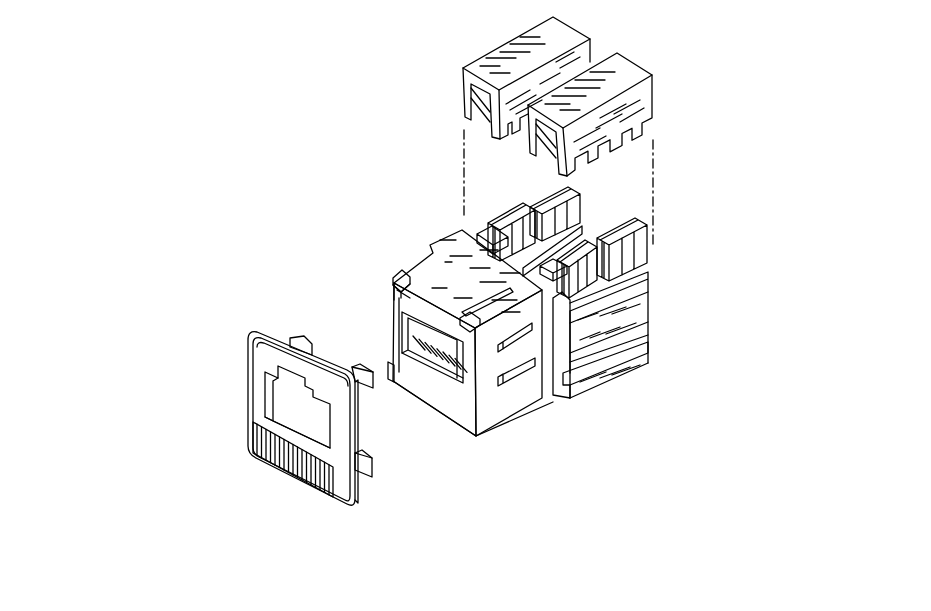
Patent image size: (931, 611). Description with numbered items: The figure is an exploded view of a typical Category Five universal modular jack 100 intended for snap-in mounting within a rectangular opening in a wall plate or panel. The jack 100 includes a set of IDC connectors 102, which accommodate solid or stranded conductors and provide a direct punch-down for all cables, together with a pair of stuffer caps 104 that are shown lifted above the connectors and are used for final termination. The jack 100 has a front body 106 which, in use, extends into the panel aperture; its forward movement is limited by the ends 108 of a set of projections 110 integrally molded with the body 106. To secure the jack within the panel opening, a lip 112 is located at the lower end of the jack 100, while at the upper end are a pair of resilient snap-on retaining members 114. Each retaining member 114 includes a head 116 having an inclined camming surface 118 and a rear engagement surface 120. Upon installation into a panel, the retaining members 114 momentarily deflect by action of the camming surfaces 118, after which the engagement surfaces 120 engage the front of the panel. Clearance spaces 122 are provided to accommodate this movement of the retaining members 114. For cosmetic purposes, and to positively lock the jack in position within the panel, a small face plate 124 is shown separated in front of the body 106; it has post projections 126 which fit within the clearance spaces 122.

The universal modular jack 100 is at (320, 147).
The IDC connectors 102 is at (684, 240).
The stuffer caps 104 is at (532, 43).
The front body 106 is at (440, 403).
The ends 108 is at (497, 410).
The projections 110 is at (498, 405).
The lip 112 is at (478, 441).
The resilient snap-on retaining members 114 is at (412, 230).
The head 116 is at (365, 280).
The inclined camming surface 118 is at (393, 280).
The rear engagement surface 120 is at (405, 277).
The clearance spaces 122 is at (397, 366).
The face plate 124 is at (280, 467).
The post projections 126 is at (372, 463).